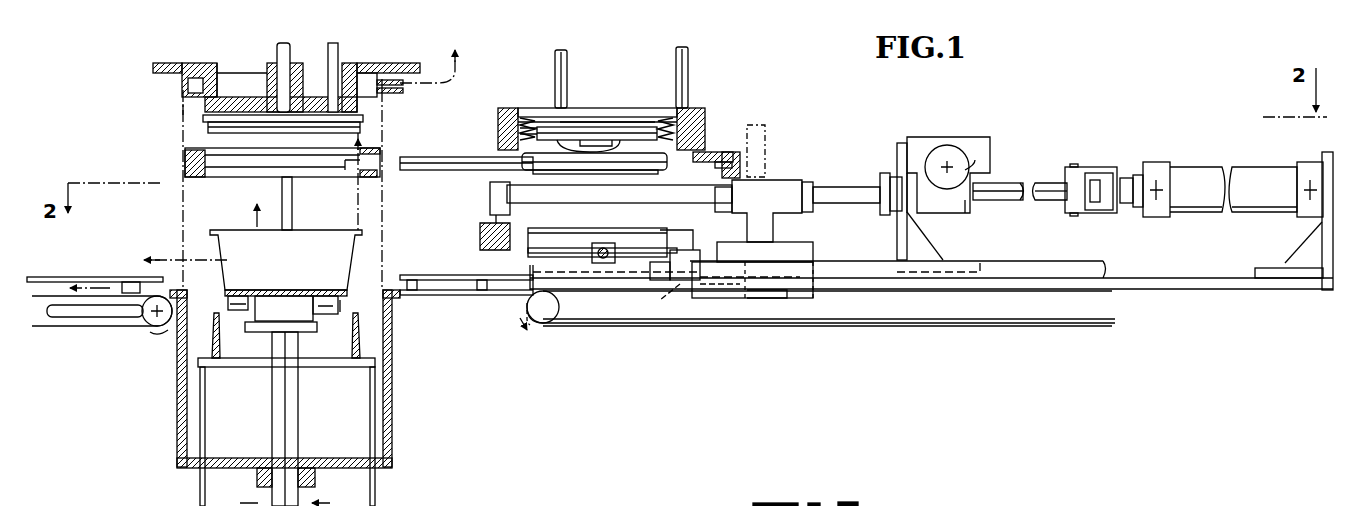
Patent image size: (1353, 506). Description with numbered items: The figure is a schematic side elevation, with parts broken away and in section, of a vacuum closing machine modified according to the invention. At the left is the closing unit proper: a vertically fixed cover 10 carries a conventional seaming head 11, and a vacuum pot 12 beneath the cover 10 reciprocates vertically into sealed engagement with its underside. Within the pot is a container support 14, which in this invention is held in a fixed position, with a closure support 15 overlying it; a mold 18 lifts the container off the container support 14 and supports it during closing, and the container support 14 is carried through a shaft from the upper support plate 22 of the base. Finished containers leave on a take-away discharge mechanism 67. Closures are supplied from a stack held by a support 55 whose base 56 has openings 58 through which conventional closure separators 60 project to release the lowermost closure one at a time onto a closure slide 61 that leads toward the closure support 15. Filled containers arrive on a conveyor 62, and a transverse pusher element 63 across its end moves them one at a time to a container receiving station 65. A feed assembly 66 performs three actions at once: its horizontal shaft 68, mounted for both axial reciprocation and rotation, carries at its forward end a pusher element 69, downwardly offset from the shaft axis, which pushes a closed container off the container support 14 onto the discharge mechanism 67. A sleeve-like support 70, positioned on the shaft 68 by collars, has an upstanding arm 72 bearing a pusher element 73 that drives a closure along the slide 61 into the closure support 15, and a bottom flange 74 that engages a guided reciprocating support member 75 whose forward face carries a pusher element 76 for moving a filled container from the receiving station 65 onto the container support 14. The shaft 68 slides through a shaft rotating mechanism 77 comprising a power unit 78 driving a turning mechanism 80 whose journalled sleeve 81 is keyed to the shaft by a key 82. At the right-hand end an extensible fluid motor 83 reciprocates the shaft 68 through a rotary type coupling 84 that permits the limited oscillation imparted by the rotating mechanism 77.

The cover 10 is at (180, 90).
The seaming head 11 is at (363, 120).
The vacuum pot 12 is at (392, 400).
The container support 14 is at (272, 290).
The closure support 15 is at (318, 177).
The mold 18 is at (240, 365).
The upper support plate 22 is at (298, 410).
The closure support (stack support) 55 is at (712, 108).
The base 56 is at (705, 128).
The openings 58 is at (600, 117).
The closure separators 60 is at (555, 130).
The closure slide 61 is at (440, 157).
The conveyor 62 is at (900, 323).
The transverse pusher element 63 is at (600, 258).
The container receiving station 65 is at (676, 248).
The feed assembly 66 is at (1030, 158).
The discharge mechanism 67 is at (82, 338).
The shaft 68 is at (830, 185).
The pusher element 69 is at (480, 238).
The sleeve-like support 70 is at (778, 185).
The upstanding arm 72 is at (752, 177).
The pusher element 73 is at (728, 160).
The bottom flange 74 is at (790, 235).
The support member 75 is at (790, 255).
The pusher element 76 is at (685, 296).
The shaft rotating mechanism 77 is at (955, 132).
The power unit 78 is at (980, 146).
The turning mechanism 80 is at (935, 148).
The sleeve 81 is at (968, 208).
The key 82 is at (1000, 183).
The extensible fluid motor 83 is at (1190, 167).
The rotary type coupling 84 is at (1100, 167).